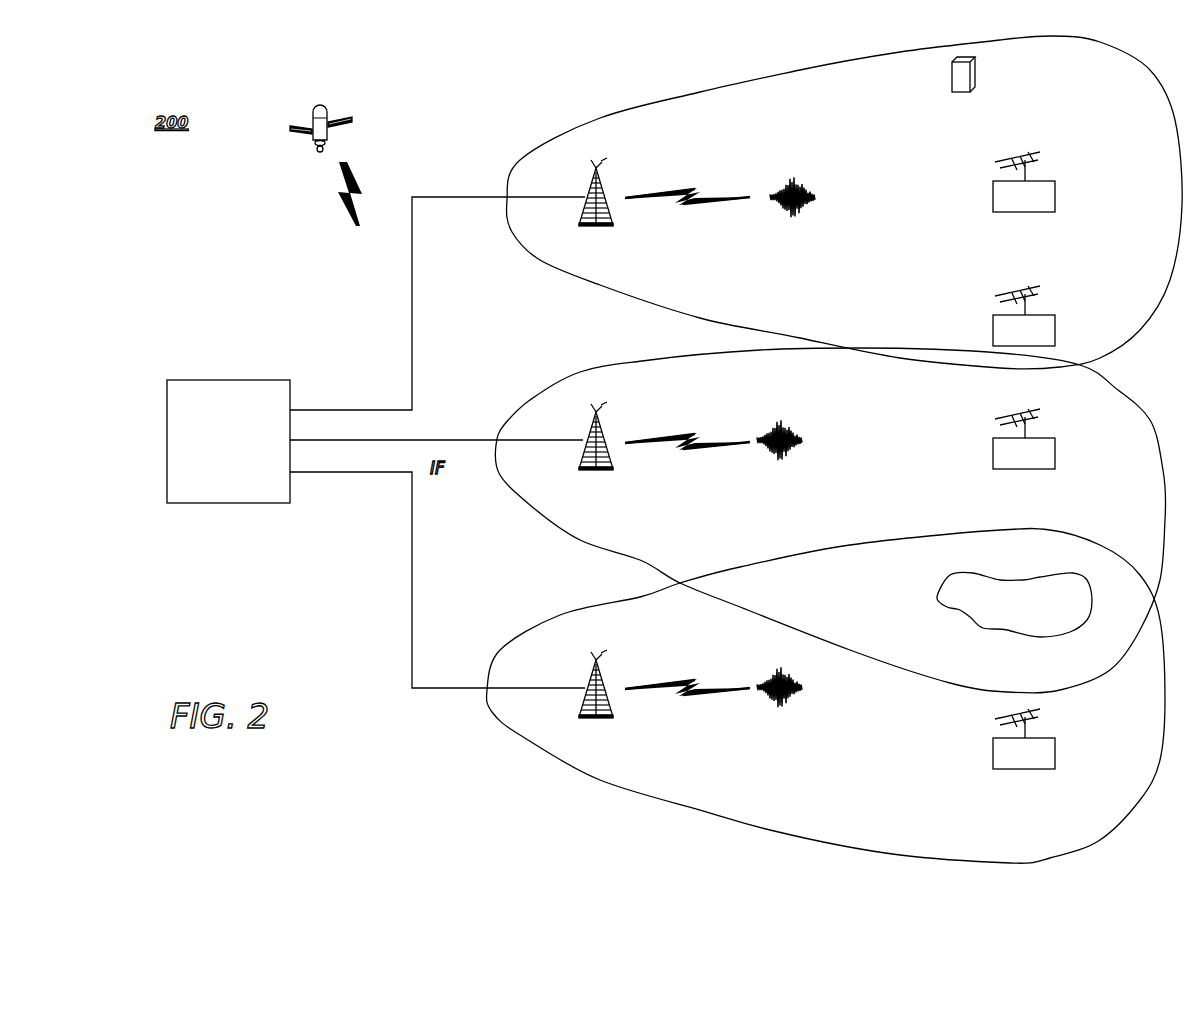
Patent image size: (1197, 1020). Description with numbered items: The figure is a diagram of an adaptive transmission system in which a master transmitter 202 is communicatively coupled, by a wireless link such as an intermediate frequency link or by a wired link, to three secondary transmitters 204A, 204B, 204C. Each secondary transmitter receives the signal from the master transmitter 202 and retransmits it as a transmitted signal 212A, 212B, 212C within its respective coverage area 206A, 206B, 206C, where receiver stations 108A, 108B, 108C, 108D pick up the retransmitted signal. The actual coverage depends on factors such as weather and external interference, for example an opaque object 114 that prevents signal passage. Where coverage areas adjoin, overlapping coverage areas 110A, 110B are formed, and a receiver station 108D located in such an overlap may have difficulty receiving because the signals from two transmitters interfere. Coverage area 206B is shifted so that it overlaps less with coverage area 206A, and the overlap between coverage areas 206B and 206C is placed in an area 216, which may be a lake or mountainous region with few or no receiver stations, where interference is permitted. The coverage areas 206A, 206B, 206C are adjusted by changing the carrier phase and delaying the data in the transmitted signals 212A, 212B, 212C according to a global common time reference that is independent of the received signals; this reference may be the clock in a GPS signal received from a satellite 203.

The satellite 203 is at (330, 120).
The master transmitter 202 is at (218, 380).
The coverage area 206A is at (562, 136).
The coverage area 206B is at (580, 372).
The coverage area 206C is at (550, 622).
The secondary transmitter 204A is at (607, 165).
The secondary transmitter 204B is at (605, 410).
The secondary transmitter 204C is at (607, 660).
The transmitted signal 212A is at (808, 167).
The transmitted signal 212B is at (795, 422).
The transmitted signal 212C is at (790, 665).
The overlapping coverage area 110A is at (840, 322).
The overlapping coverage area 110B is at (847, 575).
The opaque object 114 is at (975, 68).
The receiver station 108A is at (1022, 215).
The receiver station 108B is at (1013, 470).
The receiver station 108C is at (1013, 767).
The receiver station 108D is at (993, 340).
The area 216 is at (1025, 580).